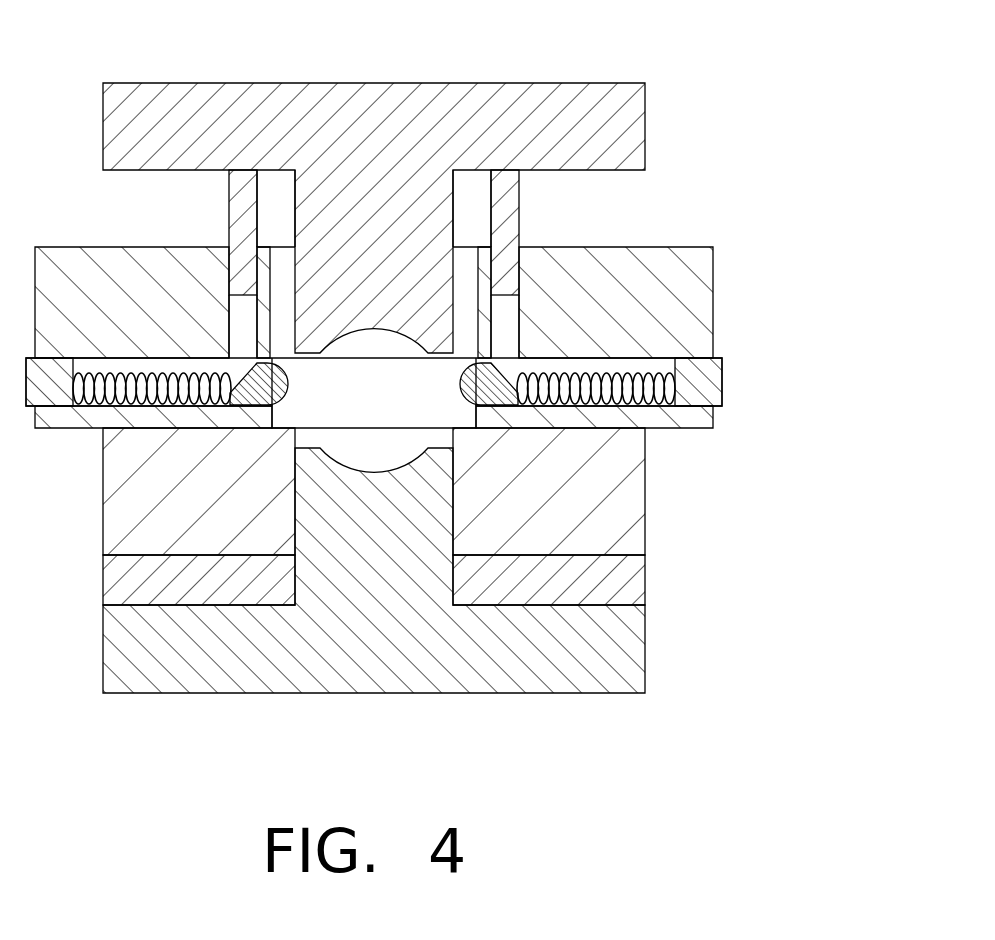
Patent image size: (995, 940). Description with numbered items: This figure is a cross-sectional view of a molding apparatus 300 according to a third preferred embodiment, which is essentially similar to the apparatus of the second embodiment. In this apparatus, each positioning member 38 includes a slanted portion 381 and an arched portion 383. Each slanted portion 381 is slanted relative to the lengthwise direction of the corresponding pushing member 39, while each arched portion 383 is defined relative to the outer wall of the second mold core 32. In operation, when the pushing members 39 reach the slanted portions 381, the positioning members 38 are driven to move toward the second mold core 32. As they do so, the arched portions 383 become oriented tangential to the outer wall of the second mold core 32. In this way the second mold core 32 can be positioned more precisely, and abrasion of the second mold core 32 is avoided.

The molding apparatus 300 is at (418, 36).
The second mold core 32 is at (603, 128).
The pushing member 39 is at (507, 223).
The positioning member 38 is at (458, 456).
The slanted portion 381 is at (502, 374).
The arched portion 383 is at (478, 406).